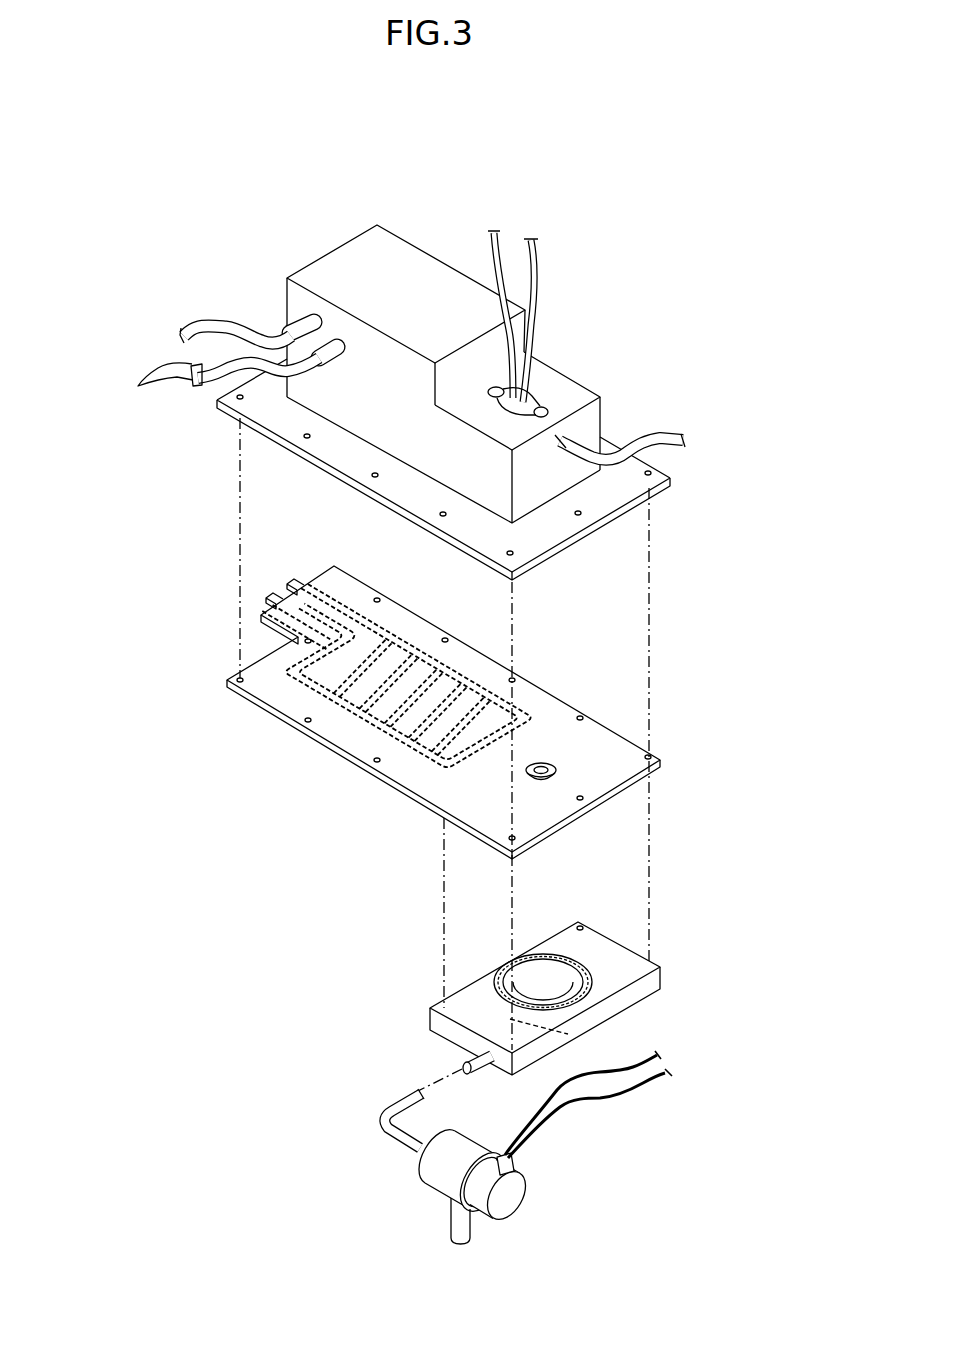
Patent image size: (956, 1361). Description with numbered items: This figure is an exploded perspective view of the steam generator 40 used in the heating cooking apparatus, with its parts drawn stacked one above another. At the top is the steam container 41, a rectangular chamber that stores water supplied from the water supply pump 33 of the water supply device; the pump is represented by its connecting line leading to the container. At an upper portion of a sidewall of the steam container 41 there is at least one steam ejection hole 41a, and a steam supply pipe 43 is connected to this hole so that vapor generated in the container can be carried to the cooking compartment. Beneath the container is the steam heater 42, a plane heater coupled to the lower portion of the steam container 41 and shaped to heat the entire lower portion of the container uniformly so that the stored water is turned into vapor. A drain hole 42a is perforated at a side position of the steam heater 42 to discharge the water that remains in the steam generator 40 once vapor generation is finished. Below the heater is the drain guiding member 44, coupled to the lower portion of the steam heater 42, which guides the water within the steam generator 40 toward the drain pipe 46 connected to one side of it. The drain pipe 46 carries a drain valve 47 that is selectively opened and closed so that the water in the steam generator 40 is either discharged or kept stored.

The steam generator 40 is at (232, 300).
The steam container 41 is at (328, 268).
The steam ejection hole 41a is at (288, 326).
The steam supply pipe 43 is at (215, 363).
The water supply pump 33 is at (670, 433).
The steam heater 42 is at (628, 745).
The drain hole 42a is at (552, 769).
The drain guiding member 44 is at (630, 973).
The drain pipe 46 is at (406, 1138).
The drain valve 47 is at (480, 1195).